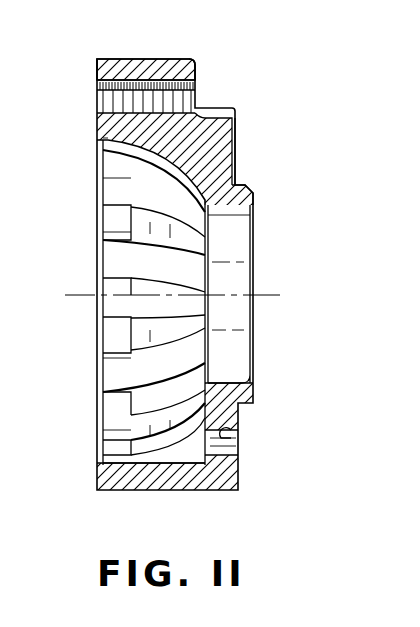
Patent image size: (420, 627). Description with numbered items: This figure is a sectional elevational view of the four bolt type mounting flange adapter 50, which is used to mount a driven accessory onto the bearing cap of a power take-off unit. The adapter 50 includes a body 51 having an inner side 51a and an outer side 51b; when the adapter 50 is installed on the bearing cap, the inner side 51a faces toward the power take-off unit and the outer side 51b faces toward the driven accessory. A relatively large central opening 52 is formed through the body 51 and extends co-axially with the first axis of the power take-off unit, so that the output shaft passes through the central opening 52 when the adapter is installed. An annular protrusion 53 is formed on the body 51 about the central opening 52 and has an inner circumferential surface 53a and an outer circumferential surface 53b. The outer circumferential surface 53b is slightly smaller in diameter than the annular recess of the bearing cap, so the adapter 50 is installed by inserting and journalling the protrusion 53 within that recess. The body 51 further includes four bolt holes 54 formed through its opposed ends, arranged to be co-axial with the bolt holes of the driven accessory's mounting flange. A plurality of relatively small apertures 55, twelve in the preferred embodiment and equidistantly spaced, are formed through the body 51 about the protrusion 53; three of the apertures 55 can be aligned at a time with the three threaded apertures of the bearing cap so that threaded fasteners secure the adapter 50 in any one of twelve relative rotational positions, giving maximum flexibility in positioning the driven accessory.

The four bolt type mounting flange adapter 50 is at (175, 274).
The body 51 is at (157, 62).
The inner side 51a is at (196, 72).
The outer side 51b is at (97, 73).
The central opening 52 is at (234, 381).
The annular protrusion 53 is at (254, 196).
The inner circumferential surface 53a is at (246, 216).
The outer circumferential surface 53b is at (238, 187).
The bolt holes 54 is at (106, 110).
The apertures 55 is at (237, 438).